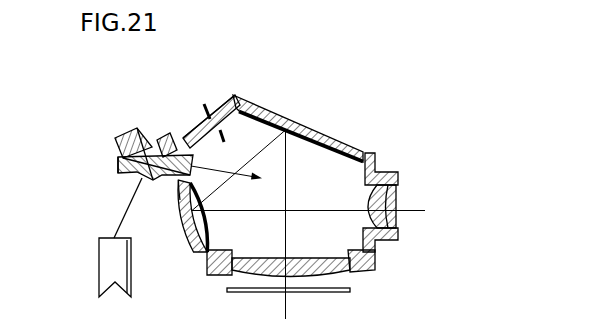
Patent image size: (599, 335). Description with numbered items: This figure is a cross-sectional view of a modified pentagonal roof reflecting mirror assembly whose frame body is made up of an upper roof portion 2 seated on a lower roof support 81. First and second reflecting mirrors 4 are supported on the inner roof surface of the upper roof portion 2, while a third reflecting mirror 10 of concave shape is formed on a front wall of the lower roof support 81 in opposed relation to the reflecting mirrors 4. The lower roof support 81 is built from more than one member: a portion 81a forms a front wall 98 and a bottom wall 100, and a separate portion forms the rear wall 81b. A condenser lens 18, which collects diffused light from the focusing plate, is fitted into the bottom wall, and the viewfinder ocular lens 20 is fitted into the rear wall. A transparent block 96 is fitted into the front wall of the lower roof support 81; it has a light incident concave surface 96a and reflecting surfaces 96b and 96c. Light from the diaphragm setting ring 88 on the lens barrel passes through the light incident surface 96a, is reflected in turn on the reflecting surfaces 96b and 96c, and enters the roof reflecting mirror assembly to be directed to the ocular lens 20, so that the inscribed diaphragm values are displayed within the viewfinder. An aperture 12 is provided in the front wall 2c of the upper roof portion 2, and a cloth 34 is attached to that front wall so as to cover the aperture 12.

The upper roof portion 2 is at (318, 127).
The front wall of upper roof portion 2c is at (195, 131).
The reflecting mirrors 4 is at (323, 149).
The third reflecting mirror 10 is at (199, 235).
The aperture 12 is at (220, 137).
The condenser lens 18 is at (300, 258).
The ocular lens 20 is at (397, 191).
The cloth 34 is at (221, 104).
The lower roof support 81 is at (193, 254).
The portion of lower roof support 81a is at (206, 263).
The rear wall 81b is at (388, 241).
The diaphragm setting ring 88 is at (98, 250).
The transparent block 96 is at (122, 133).
The light incident concave surface 96a is at (118, 167).
The reflecting surface 96b is at (156, 139).
The reflecting surface 96c is at (115, 143).
The front wall 98 is at (180, 198).
The bottom wall 100 is at (362, 273).